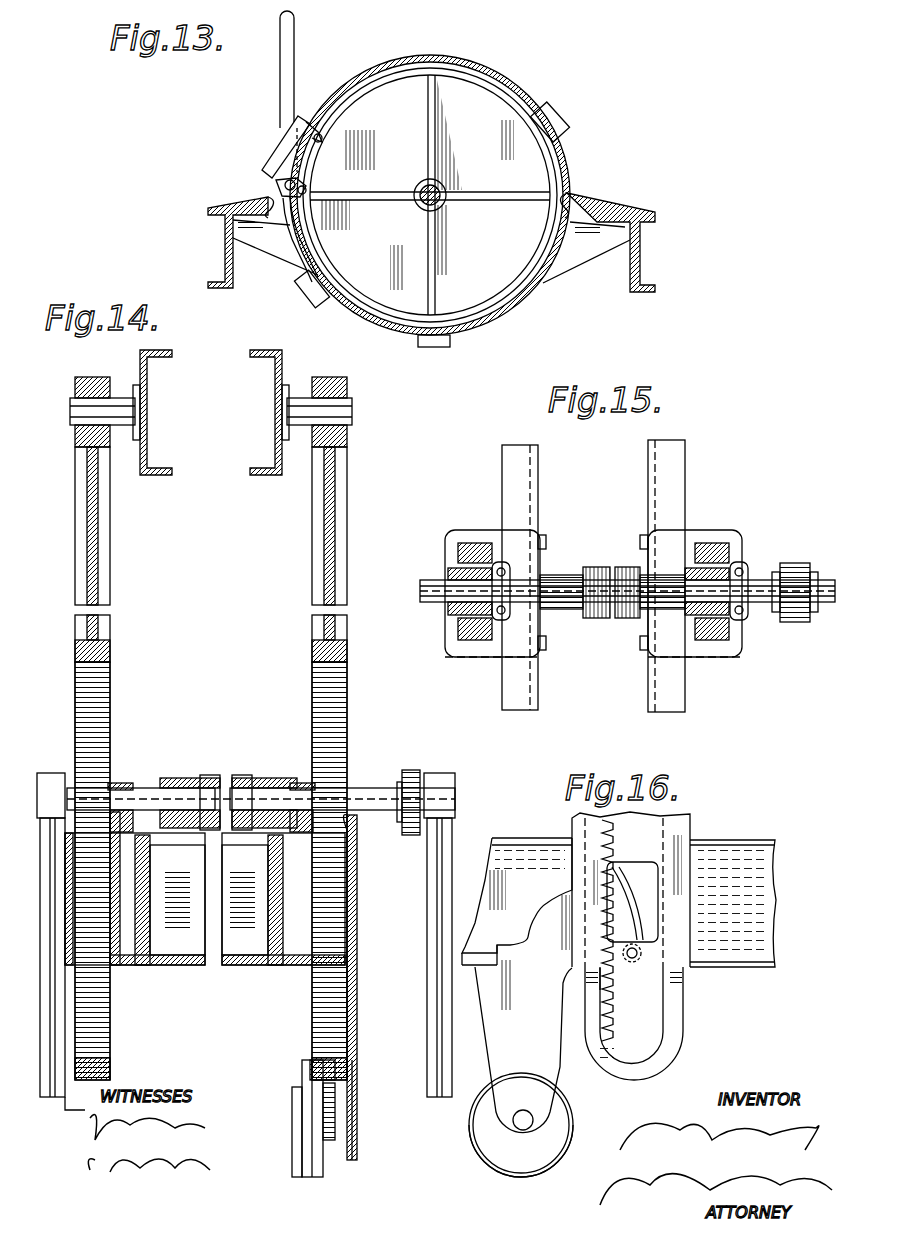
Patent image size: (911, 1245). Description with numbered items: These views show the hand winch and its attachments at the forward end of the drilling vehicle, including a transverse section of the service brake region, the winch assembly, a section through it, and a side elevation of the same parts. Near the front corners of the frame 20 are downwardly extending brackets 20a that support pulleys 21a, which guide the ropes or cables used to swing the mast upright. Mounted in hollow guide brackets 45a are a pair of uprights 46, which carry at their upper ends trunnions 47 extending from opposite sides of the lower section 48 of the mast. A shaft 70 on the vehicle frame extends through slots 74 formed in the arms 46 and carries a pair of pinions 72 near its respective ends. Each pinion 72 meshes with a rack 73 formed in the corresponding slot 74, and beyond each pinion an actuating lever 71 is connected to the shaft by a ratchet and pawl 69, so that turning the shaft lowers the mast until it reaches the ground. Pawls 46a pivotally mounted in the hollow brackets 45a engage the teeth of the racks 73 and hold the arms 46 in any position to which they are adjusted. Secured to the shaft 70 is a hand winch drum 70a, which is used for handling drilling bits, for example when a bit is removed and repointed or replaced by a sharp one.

In FIG. 13, the frame 20 is at (228, 265).
In FIG. 14, the frame 20 is at (143, 962).
In FIG. 15, the frame 20 is at (530, 683).
In FIG. 16, the frame 20 is at (723, 840).
In FIG. 14, the downwardly extending brackets 20a is at (357, 1056).
In FIG. 16, the downwardly extending brackets 20a is at (548, 1052).
In FIG. 14, the pulleys 21a is at (335, 1162).
In FIG. 16, the pulleys 21a is at (512, 1165).
In FIG. 14, the guide brackets 45a is at (357, 905).
In FIG. 15, the guide brackets 45a is at (447, 540).
In FIG. 16, the guide brackets 45a is at (685, 927).
In FIG. 14, the uprights 46 is at (100, 570).
In FIG. 15, the uprights 46 is at (472, 543).
In FIG. 16, the uprights 46 is at (682, 982).
In FIG. 16, the pawls 46a is at (630, 908).
In FIG. 14, the trunnions 47 is at (122, 398).
In FIG. 14, the lower section of the mast 48 is at (147, 378).
In FIG. 14, the ratchet and pawl 69 is at (412, 772).
In FIG. 15, the ratchet and pawl 69 is at (798, 622).
In FIG. 14, the shaft 70 is at (145, 790).
In FIG. 15, the shaft 70 is at (535, 605).
In FIG. 14, the hand winch drum 70a is at (215, 778).
In FIG. 15, the hand winch drum 70a is at (595, 567).
In FIG. 14, the actuating lever 71 is at (42, 975).
In FIG. 14, the pinions 72 is at (115, 785).
In FIG. 15, the pinions 72 is at (455, 612).
In FIG. 14, the racks 73 is at (108, 716).
In FIG. 16, the racks 73 is at (613, 997).
In FIG. 14, the slots 74 is at (108, 686).
In FIG. 16, the slots 74 is at (642, 1028).